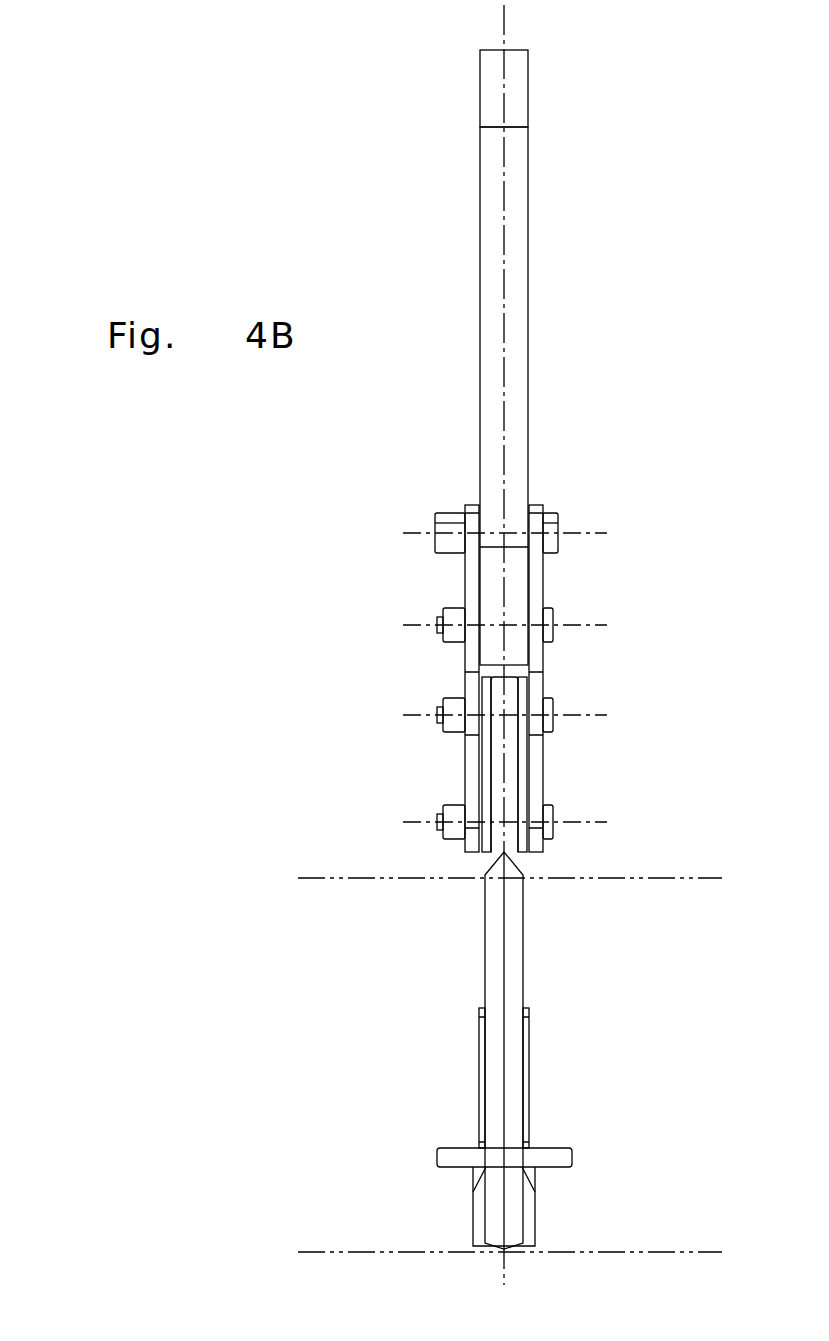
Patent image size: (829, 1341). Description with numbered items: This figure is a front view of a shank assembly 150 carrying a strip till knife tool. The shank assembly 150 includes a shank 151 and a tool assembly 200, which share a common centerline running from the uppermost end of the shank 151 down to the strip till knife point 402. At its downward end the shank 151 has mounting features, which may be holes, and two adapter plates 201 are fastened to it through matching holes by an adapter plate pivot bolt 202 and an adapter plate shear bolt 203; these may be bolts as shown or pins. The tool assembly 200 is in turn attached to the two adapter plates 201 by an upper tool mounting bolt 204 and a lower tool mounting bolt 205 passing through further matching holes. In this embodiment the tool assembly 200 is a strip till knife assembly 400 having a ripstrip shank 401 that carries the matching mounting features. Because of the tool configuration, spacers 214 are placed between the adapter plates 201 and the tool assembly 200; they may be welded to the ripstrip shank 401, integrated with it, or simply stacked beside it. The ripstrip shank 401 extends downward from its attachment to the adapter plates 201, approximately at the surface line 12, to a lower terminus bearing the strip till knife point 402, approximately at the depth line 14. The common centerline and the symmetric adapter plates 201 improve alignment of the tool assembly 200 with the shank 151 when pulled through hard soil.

The surface line 12 is at (687, 878).
The depth line 14 is at (687, 1252).
The shank assembly 150 is at (529, 216).
The shank 151 is at (529, 80).
The tool assembly 200 is at (523, 958).
The adapter plates 201 is at (465, 578).
The adapter plate pivot bolt 202 is at (553, 530).
The adapter plate shear bolt 203 is at (555, 628).
The upper tool mounting bolt 204 is at (555, 713).
The lower tool mounting bolt 205 is at (555, 822).
The spacers 214 is at (485, 786).
The strip till knife assembly 400 is at (523, 997).
The ripstrip shank 401 is at (508, 776).
The strip till knife point 402 is at (535, 1227).